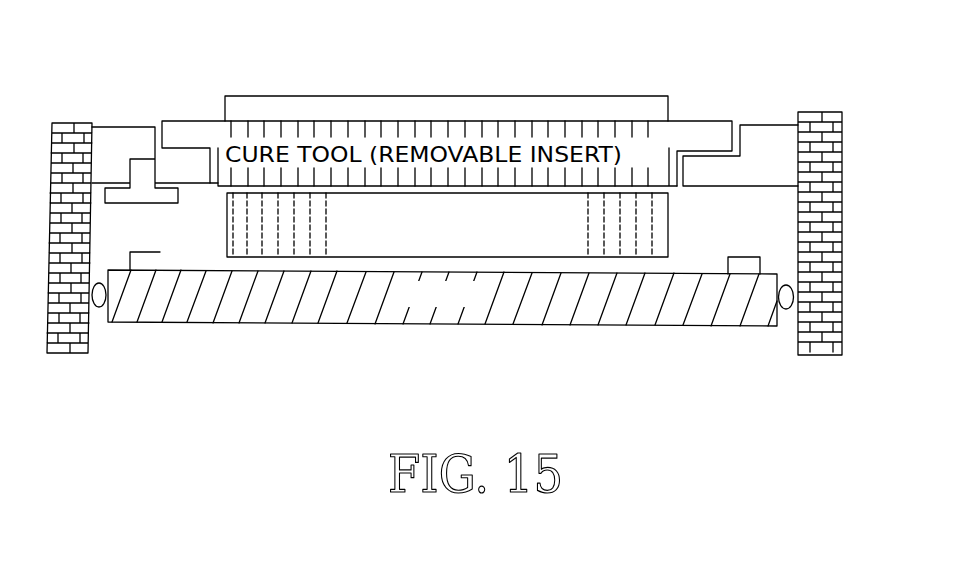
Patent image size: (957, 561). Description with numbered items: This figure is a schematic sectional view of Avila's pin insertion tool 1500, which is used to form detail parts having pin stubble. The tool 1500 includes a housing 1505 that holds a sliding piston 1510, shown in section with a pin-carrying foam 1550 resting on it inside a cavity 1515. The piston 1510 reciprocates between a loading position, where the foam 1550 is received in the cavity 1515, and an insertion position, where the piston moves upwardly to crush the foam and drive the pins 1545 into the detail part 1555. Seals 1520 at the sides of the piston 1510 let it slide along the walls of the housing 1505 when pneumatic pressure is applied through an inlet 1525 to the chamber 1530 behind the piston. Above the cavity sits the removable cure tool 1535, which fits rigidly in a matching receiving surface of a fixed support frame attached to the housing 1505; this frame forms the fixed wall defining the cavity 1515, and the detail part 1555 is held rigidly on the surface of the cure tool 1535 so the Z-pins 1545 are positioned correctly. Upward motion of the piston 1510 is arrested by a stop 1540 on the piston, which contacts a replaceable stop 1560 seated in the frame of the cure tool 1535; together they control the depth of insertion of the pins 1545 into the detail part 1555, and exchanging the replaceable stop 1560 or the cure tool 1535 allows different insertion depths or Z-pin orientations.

The pin insertion tool 1500 is at (232, 428).
The housing 1505 is at (842, 228).
The piston 1510 is at (383, 327).
The cavity 1515 is at (747, 236).
The seals 1520 is at (785, 309).
The inlet 1525 is at (88, 341).
The chamber 1530 is at (315, 351).
The removable cure tool 1535 is at (207, 120).
The stop 1540 is at (742, 268).
The pins 1545 is at (253, 236).
The pin-carrying foam 1550 is at (222, 243).
The detail part 1555 is at (668, 105).
The replaceable stop 1560 is at (145, 172).